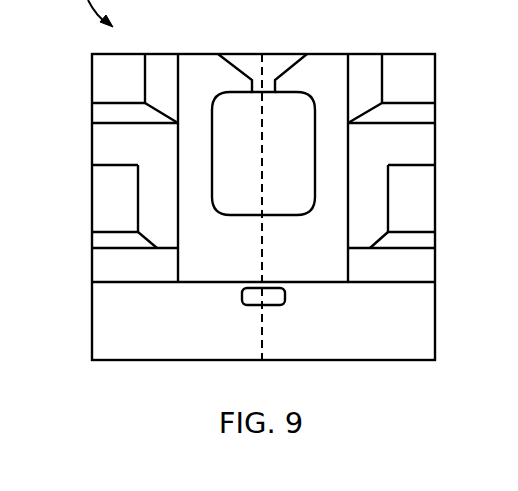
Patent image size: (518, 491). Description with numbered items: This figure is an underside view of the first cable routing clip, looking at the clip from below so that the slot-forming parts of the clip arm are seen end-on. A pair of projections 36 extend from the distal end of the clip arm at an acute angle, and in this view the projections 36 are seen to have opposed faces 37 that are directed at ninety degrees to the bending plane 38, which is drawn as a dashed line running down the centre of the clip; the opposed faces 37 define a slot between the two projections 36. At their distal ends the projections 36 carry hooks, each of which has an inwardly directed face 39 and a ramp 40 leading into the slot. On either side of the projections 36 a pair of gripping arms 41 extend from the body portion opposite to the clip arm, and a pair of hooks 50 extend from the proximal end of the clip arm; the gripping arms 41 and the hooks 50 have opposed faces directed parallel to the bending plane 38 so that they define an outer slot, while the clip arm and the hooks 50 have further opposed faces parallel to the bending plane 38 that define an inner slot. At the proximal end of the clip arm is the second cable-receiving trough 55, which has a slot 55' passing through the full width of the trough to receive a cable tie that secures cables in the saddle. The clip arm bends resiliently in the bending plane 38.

The projections 36 is at (190, 54).
The opposed faces 37 is at (212, 157).
The bending plane 38 is at (260, 340).
The inwardly directed faces 39 is at (228, 95).
The ramps 40 is at (272, 62).
The gripping arms 41 is at (107, 87).
The hooks 50 is at (102, 200).
The second cable-receiving trough 55 is at (375, 381).
The slot 55' is at (300, 309).